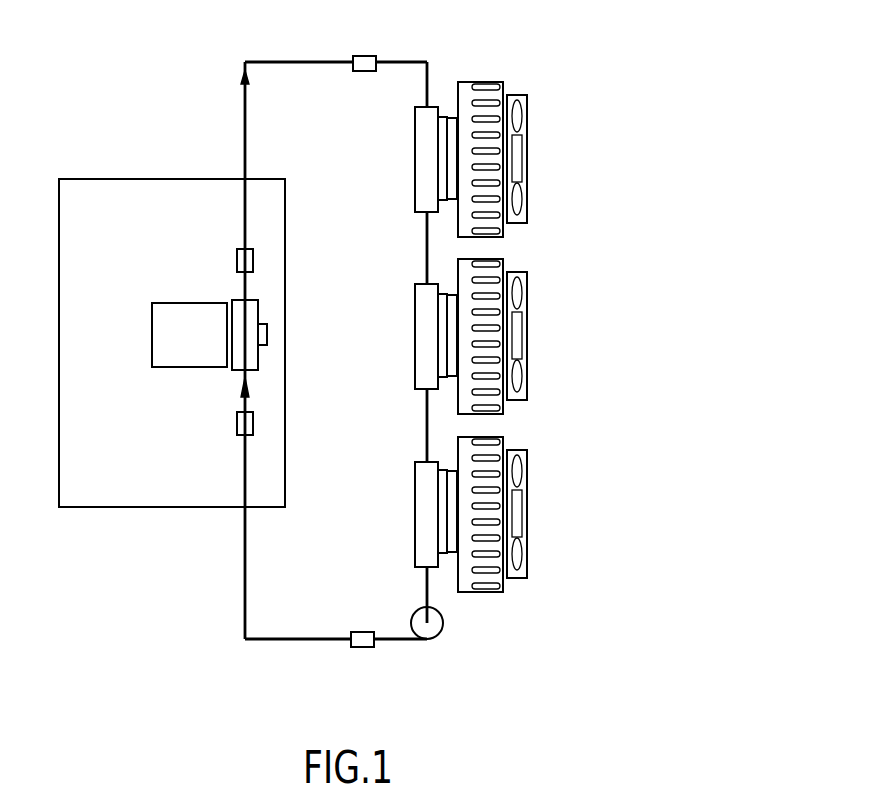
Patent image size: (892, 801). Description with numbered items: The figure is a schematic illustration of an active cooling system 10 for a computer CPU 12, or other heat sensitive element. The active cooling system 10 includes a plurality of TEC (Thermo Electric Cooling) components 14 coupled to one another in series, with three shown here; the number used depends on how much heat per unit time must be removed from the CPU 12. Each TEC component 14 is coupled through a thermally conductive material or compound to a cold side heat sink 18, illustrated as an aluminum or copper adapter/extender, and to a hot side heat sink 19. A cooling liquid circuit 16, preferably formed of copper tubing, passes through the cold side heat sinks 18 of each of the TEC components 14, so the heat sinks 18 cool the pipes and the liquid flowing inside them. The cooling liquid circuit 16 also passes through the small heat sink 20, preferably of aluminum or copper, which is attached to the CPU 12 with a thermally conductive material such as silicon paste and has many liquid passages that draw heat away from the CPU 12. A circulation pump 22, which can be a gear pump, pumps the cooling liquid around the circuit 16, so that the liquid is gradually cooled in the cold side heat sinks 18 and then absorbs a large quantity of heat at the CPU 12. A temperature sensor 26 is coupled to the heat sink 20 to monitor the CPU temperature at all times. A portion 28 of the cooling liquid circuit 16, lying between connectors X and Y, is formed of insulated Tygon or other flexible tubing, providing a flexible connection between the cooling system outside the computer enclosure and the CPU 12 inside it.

The active cooling system 10 is at (588, 38).
The computer CPU 12 is at (188, 367).
The TEC component 14 is at (443, 295).
The cooling liquid circuit 16 is at (407, 62).
The cold side heat sink 18 is at (415, 160).
The hot side heat sink 19 is at (478, 238).
The small heat sink 20 is at (237, 298).
The circulation pump 22 is at (443, 623).
The temperature sensor 26 is at (267, 335).
The flexible tubing portion of cooling liquid circuit 28 is at (300, 639).
The connector X is at (363, 56).
The connector Y is at (365, 647).